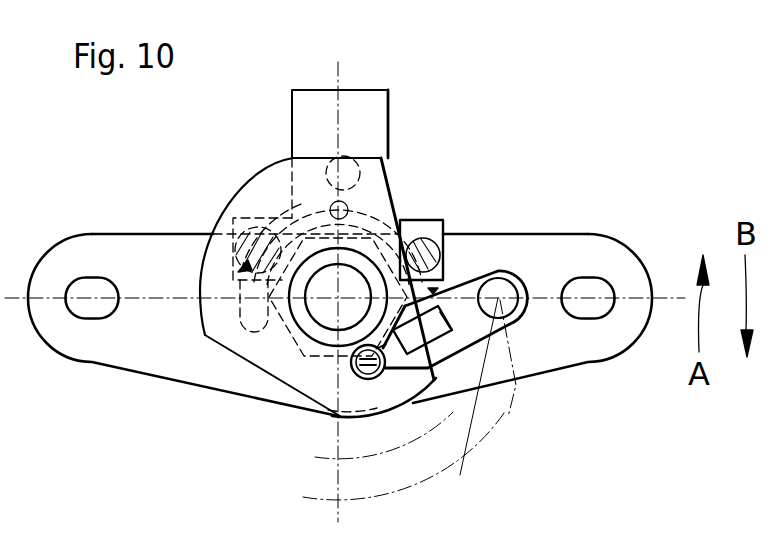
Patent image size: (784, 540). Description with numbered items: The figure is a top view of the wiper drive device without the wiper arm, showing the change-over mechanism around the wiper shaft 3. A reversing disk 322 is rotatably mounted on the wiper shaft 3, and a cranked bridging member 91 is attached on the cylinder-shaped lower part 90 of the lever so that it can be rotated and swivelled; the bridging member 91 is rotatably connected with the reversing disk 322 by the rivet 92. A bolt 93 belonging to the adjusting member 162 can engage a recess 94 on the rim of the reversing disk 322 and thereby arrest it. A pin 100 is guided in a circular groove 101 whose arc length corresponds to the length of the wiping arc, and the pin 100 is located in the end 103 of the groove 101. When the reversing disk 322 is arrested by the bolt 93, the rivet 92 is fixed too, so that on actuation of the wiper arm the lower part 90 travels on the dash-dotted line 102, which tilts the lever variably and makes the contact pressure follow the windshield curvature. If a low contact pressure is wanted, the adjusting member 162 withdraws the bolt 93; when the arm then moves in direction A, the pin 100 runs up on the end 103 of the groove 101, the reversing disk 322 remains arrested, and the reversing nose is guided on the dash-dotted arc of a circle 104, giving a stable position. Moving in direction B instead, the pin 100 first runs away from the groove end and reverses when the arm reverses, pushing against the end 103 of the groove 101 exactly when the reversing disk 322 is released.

The adjusting member 162 is at (372, 76).
The recess 94 is at (360, 160).
The bolt 93 is at (348, 203).
The pin 100 is at (389, 190).
The end of the groove 103 is at (395, 203).
The cranked bridging member 91 is at (471, 290).
The lower part 90 is at (507, 290).
The circular groove 101 is at (238, 208).
The reversing disk 322 is at (263, 202).
The wiper shaft 3 is at (330, 318).
The rivet 92 is at (356, 371).
The arc of a circle 104 is at (445, 420).
The dash-dotted line 102 is at (487, 447).